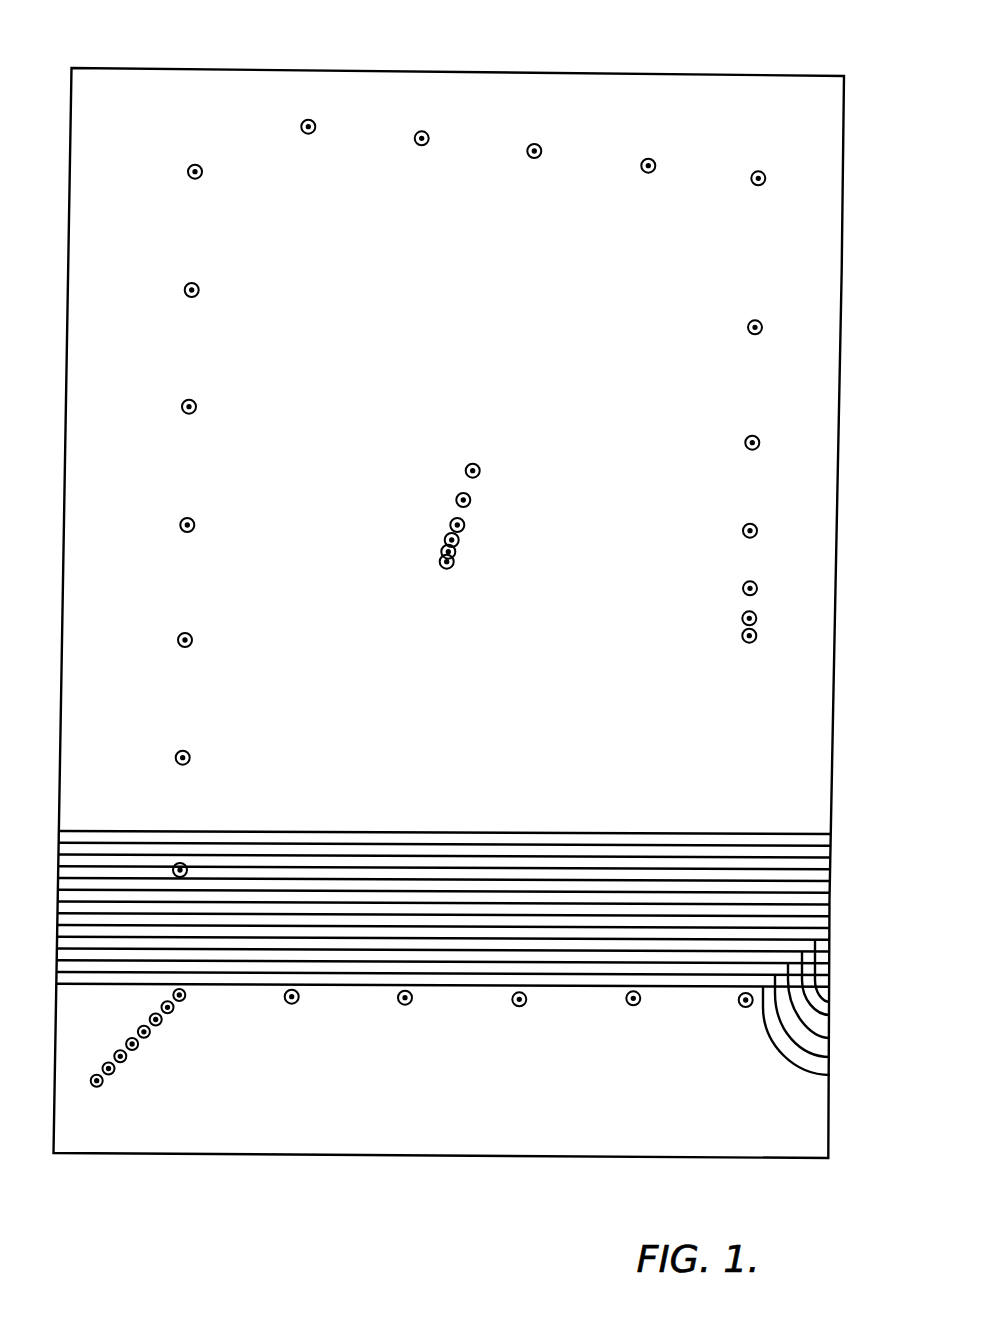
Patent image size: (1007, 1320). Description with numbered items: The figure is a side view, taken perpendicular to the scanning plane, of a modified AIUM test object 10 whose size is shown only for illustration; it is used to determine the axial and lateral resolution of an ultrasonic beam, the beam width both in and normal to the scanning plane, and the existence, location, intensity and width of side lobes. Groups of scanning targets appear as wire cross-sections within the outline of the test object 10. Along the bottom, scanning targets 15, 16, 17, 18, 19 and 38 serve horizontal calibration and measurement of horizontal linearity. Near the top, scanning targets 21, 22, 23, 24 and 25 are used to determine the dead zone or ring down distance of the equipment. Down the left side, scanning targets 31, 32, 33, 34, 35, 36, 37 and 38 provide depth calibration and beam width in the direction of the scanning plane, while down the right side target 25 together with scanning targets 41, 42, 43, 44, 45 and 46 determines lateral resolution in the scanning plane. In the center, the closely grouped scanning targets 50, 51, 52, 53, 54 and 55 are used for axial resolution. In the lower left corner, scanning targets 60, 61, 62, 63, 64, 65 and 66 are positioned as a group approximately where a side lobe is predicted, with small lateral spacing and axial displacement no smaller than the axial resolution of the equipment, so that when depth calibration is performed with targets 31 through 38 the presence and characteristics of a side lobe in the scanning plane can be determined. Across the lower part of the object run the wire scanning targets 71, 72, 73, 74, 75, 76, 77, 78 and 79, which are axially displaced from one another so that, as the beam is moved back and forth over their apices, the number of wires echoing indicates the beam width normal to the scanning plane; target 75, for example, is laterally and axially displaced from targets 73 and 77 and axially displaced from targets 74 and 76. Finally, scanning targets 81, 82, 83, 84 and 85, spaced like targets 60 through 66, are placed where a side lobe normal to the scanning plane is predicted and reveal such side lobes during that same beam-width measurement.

The modified AIUM test object 10 is at (578, 52).
The scanning target 15 is at (290, 1004).
The scanning target 16 is at (403, 1005).
The scanning target 17 is at (518, 1006).
The scanning target 18 is at (631, 1006).
The scanning target 19 is at (744, 1007).
The scanning target 21 is at (314, 121).
The scanning target 22 is at (427, 133).
The scanning target 23 is at (540, 145).
The scanning target 24 is at (653, 160).
The scanning target 25 is at (764, 173).
The scanning target 31 is at (188, 170).
The scanning target 32 is at (185, 288).
The scanning target 33 is at (182, 405).
The scanning target 34 is at (180, 524).
The scanning target 35 is at (178, 640).
The scanning target 36 is at (176, 757).
The scanning target 37 is at (176, 866).
The scanning target 38 is at (186, 998).
The scanning target 41 is at (761, 322).
The scanning target 42 is at (759, 439).
The scanning target 43 is at (756, 526).
The scanning target 44 is at (756, 584).
The scanning target 45 is at (755, 614).
The scanning target 46 is at (752, 642).
The scanning target 50 is at (478, 465).
The scanning target 51 is at (457, 497).
The scanning target 52 is at (463, 521).
The scanning target 53 is at (446, 538).
The scanning target 54 is at (455, 553).
The scanning target 55 is at (440, 561).
The scanning target 60 is at (160, 1006).
The scanning target 61 is at (162, 1023).
The scanning target 62 is at (137, 1029).
The scanning target 63 is at (138, 1047).
The scanning target 64 is at (114, 1053).
The scanning target 65 is at (115, 1070).
The scanning target 66 is at (92, 1078).
The scanning target 71 is at (830, 834).
The scanning target 72 is at (830, 846).
The scanning target 73 is at (830, 858).
The scanning target 74 is at (830, 869).
The scanning target 75 is at (830, 881).
The scanning target 76 is at (830, 893).
The scanning target 77 is at (830, 905).
The scanning target 78 is at (830, 916).
The scanning target 79 is at (830, 928).
The scanning target 81 is at (830, 1002).
The scanning target 82 is at (830, 1015).
The scanning target 83 is at (830, 1038).
The scanning target 84 is at (830, 1057).
The scanning target 85 is at (830, 1075).